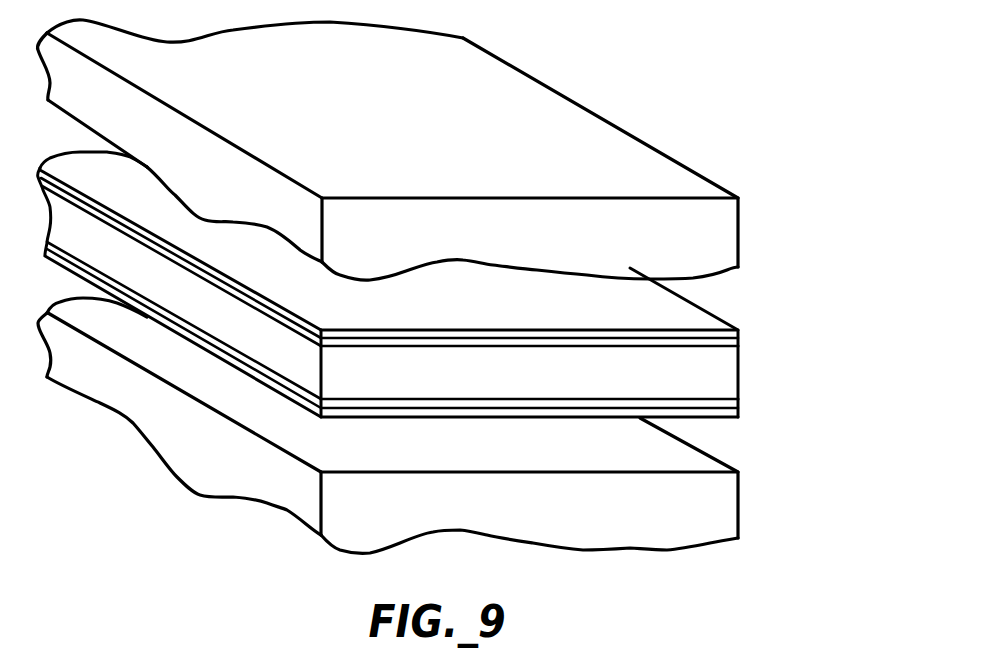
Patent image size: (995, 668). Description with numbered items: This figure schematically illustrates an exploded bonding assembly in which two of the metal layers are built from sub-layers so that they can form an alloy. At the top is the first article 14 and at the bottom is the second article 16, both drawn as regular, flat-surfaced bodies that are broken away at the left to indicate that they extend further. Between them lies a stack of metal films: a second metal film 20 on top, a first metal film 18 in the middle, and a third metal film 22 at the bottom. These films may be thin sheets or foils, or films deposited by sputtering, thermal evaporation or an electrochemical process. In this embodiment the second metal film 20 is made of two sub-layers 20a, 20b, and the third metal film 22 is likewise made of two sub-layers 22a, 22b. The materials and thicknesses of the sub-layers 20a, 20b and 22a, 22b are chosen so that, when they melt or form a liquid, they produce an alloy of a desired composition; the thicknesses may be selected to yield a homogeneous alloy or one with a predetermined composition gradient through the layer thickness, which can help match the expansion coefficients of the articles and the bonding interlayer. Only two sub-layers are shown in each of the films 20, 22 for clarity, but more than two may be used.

The first article 14 is at (727, 243).
The second article 16 is at (728, 532).
The first metal film 18 is at (743, 380).
The second metal film 20 is at (743, 346).
The sub-layer 20a is at (713, 335).
The sub-layer 20b is at (740, 338).
The third metal film 22 is at (757, 403).
The sub-layer 22a is at (740, 410).
The sub-layer 22b is at (738, 418).